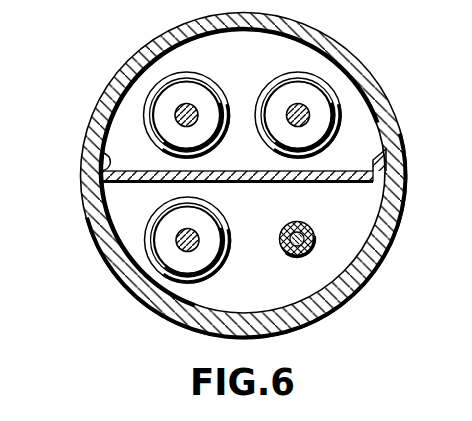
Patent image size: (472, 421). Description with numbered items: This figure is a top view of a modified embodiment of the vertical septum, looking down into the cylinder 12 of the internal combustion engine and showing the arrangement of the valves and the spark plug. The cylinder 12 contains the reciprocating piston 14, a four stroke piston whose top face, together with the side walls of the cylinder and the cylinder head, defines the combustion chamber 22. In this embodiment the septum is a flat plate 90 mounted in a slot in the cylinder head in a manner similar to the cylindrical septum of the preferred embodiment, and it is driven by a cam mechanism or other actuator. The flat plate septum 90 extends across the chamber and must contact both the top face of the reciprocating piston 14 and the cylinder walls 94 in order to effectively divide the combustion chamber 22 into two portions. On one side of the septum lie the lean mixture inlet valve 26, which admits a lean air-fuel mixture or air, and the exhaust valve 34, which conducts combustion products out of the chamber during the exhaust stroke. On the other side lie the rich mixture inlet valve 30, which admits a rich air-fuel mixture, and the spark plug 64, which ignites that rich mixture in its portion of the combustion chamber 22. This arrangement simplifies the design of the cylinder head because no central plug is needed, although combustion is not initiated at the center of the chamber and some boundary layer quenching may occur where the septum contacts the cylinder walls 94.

The cylinder 12 is at (398, 217).
The combustion chamber 22 is at (122, 203).
The lean mixture inlet valve 26 is at (157, 85).
The exhaust valve 34 is at (307, 90).
The rich mixture inlet valve 30 is at (153, 258).
The flat plate septum 90 is at (291, 183).
The cylinder walls 94 is at (100, 152).
The spark plug 64 is at (318, 240).
The reciprocating piston 14 is at (256, 300).